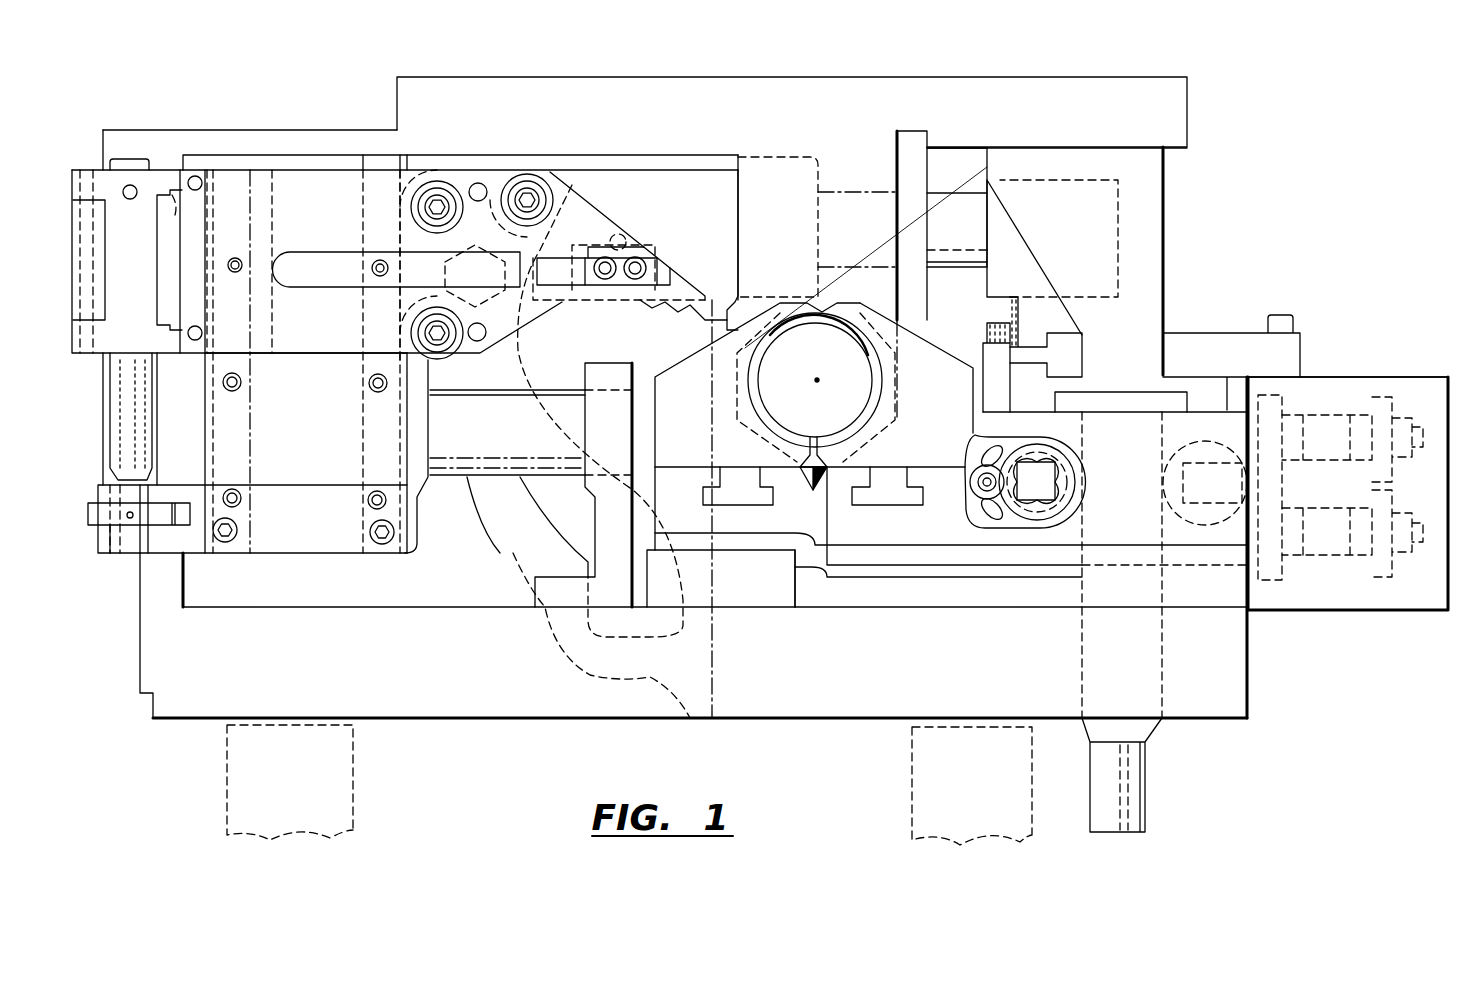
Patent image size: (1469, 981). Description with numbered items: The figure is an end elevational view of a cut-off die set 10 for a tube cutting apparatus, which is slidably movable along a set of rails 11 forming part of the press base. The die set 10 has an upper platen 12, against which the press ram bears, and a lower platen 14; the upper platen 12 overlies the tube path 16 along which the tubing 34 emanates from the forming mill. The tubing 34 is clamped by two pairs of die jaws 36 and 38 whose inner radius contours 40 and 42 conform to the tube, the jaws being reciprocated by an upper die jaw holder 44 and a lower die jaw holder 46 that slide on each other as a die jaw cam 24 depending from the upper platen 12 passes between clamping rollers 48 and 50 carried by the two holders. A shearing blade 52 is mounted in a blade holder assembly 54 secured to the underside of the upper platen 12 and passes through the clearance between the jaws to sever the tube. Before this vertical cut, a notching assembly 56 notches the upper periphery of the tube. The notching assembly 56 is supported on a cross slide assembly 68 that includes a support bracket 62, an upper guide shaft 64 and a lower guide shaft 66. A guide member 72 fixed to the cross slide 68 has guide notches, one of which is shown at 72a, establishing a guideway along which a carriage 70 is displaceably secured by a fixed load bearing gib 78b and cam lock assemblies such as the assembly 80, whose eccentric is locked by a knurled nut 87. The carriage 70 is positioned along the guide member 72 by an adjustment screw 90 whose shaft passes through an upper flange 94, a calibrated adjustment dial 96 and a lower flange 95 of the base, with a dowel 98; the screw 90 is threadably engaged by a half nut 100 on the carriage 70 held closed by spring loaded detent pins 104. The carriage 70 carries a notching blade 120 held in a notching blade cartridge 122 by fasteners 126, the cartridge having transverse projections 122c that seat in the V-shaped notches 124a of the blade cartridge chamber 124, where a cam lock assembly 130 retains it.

The cut-off die set 10 is at (662, 58).
The rails 11 is at (245, 787).
The upper platen 12 is at (1170, 108).
The lower platen 14 is at (582, 720).
The tube path 16 is at (820, 378).
The die jaw cam 24 is at (1133, 795).
The tubing 34 is at (867, 343).
The die jaws 36 is at (695, 385).
The die jaws 38 is at (920, 376).
The inner radius contour 40 is at (750, 390).
The inner radius contour 42 is at (875, 392).
The upper die jaw holder 44 is at (945, 530).
The lower die jaw holder 46 is at (810, 592).
The clamping roller 48 is at (1075, 500).
The clamping roller 50 is at (1190, 455).
The shearing blade 52 is at (888, 300).
The blade holder assembly 54 is at (857, 150).
The notching assembly 56 is at (347, 158).
The support bracket 62 is at (600, 377).
The upper guide shaft 64 is at (943, 222).
The lower guide shaft 66 is at (540, 447).
The cross slide assembly 68 is at (650, 176).
The carriage 70 is at (303, 335).
The guide member 72 is at (265, 463).
The guide notch 72a is at (402, 168).
The guide rail 78b is at (212, 172).
The cam lock assembly 80 is at (408, 207).
The knurled nut 87 is at (408, 333).
The adjustment screw 90 is at (120, 408).
The upper flange 94 is at (105, 495).
The lower flange 95 is at (108, 545).
The calibrated adjustment dial 96 is at (100, 517).
The dowel 98 is at (225, 545).
The half nut 100 is at (150, 185).
The spring loaded detent pins 104 is at (172, 320).
The notching blade 120 is at (722, 295).
The notching blade cartridge 122 is at (565, 278).
The transverse projections 122c is at (600, 258).
The blade cartridge chamber 124 is at (597, 222).
The V-shaped notches 124a is at (665, 283).
The fasteners 126 is at (312, 275).
The cam lock assembly 130 is at (537, 178).